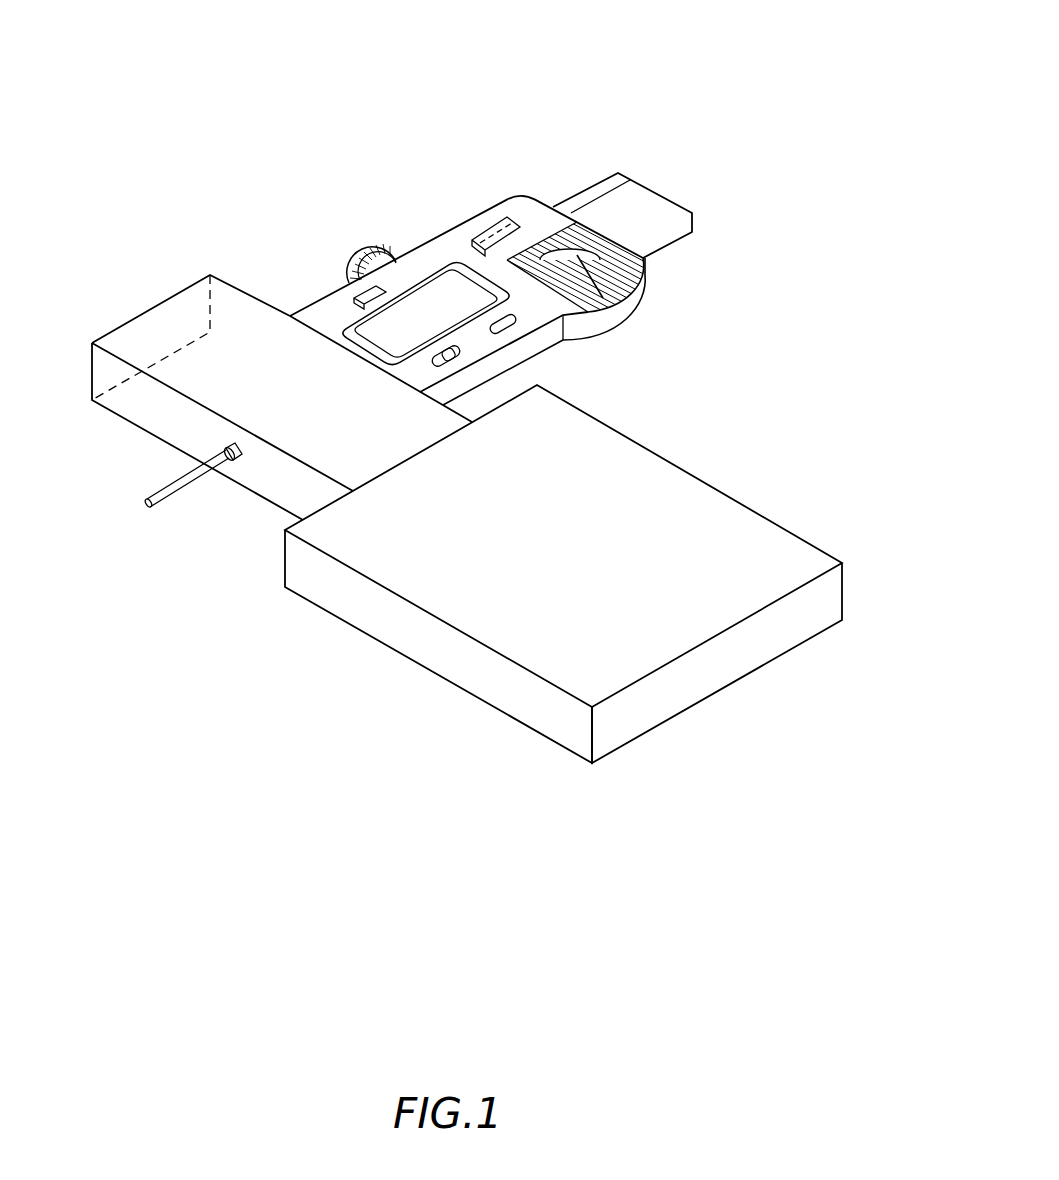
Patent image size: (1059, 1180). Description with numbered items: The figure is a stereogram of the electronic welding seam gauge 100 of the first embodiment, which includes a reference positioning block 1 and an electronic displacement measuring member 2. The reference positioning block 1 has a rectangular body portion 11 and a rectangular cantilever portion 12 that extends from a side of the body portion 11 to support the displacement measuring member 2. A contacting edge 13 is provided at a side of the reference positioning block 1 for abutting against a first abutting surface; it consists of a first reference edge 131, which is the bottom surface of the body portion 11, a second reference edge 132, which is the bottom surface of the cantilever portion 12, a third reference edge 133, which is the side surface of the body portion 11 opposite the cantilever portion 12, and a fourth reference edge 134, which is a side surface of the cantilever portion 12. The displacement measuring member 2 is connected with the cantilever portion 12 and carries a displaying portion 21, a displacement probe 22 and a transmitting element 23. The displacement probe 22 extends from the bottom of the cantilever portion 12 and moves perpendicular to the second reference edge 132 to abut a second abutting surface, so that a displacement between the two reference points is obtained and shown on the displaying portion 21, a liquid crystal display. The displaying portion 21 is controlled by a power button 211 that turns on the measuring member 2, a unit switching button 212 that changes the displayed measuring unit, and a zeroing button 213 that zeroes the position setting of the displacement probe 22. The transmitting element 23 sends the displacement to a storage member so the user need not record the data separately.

The electronic welding seam gauge 100 is at (764, 80).
The reference positioning block 1 is at (751, 468).
The body portion 11 is at (660, 500).
The cantilever portion 12 is at (248, 327).
The contacting edge 13 is at (780, 643).
The first reference edge 131 is at (437, 650).
The second reference edge 132 is at (152, 402).
The third reference edge 133 is at (700, 675).
The fourth reference edge 134 is at (143, 333).
The electronic displacement measuring member 2 is at (527, 150).
The displaying portion 21 is at (447, 300).
The power button 211 is at (447, 360).
The unit switching button 212 is at (358, 298).
The zeroing button 213 is at (510, 327).
The displacement probe 22 is at (170, 490).
The transmitting element 23 is at (491, 222).